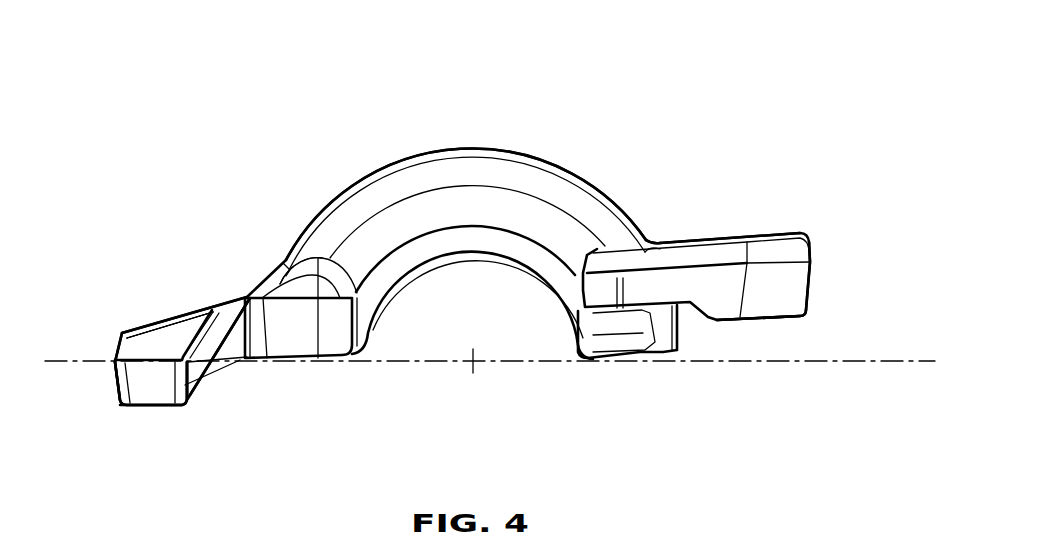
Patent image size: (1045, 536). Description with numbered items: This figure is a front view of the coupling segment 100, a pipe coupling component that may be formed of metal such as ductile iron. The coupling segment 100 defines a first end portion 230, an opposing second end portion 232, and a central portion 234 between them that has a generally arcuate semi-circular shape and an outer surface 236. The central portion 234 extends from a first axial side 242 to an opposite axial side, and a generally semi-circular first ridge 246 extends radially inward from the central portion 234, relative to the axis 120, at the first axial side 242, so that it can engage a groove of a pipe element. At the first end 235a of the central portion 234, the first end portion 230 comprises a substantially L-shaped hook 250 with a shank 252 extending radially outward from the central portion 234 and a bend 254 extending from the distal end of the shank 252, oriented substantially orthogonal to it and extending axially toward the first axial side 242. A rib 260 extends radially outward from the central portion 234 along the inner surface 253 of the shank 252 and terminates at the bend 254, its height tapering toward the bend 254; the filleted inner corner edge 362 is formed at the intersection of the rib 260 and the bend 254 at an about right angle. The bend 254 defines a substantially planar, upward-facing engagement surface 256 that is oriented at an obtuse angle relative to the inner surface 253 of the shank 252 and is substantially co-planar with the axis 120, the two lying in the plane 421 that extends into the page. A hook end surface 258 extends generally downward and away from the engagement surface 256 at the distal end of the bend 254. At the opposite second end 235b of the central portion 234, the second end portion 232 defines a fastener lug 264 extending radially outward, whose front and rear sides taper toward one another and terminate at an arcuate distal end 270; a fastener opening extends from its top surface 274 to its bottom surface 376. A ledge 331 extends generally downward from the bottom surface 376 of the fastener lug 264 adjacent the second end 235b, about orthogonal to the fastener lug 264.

The coupling segment 100 is at (752, 97).
The axis 120 is at (474, 361).
The first end portion 230 is at (107, 293).
The second end portion 232 is at (853, 227).
The central portion 234 is at (330, 162).
The first end of the central portion 235a is at (287, 267).
The second end of the central portion 235b is at (643, 233).
The outer surface 236 is at (563, 184).
The first axial side 242 is at (452, 243).
The first ridge 246 is at (476, 238).
The hook 250 is at (90, 378).
The shank 252 is at (160, 318).
The inner surface of the shank 253 is at (177, 333).
The bend 254 is at (122, 397).
The engagement surface 256 is at (136, 357).
The hook end surface 258 is at (158, 390).
The rib 260 is at (220, 352).
The fastener lug 264 is at (830, 284).
The arcuate distal end 270 is at (812, 300).
The top surface 274 is at (768, 228).
The ledge 331 is at (620, 342).
The inner corner edge 362 is at (182, 393).
The bottom surface 376 is at (780, 320).
The plane 421 is at (905, 364).